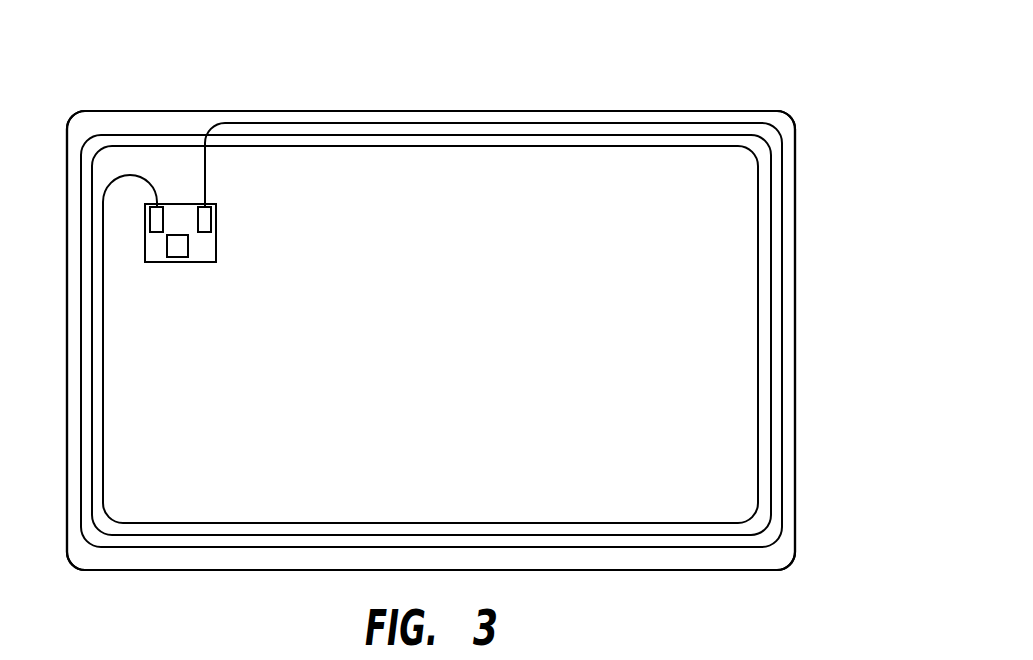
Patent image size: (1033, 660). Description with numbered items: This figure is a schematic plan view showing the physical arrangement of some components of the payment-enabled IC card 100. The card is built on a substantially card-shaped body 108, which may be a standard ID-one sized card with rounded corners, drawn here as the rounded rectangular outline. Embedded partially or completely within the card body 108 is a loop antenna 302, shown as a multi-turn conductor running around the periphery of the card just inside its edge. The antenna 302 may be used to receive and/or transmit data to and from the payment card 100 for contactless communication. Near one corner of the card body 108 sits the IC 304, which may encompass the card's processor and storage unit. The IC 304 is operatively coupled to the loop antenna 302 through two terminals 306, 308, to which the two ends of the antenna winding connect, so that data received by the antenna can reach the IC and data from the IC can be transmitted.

The payment-enabled IC card 100 is at (622, 73).
The card-shaped body 108 is at (465, 175).
The loop antenna 302 is at (725, 122).
The IC 304 is at (181, 204).
The terminal 306 is at (152, 218).
The terminal 308 is at (211, 218).